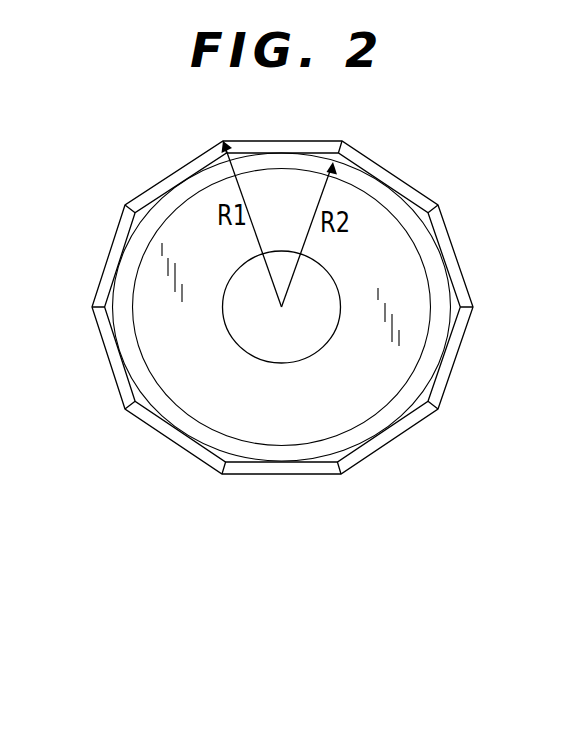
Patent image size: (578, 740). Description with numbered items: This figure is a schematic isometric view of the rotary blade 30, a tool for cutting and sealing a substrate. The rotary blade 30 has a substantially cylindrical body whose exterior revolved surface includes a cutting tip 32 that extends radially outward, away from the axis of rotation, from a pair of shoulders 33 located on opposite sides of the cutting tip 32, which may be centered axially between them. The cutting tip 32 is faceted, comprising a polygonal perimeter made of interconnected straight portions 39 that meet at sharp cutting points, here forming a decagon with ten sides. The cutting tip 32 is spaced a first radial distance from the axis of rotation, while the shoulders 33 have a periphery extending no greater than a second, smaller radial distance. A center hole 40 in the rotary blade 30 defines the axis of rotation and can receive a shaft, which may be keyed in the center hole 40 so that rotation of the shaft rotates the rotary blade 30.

The rotary blade 30 is at (378, 268).
The cutting tip 32 is at (385, 167).
The shoulders 33 is at (435, 350).
The straight portions 39 is at (285, 141).
The center hole 40 is at (240, 266).